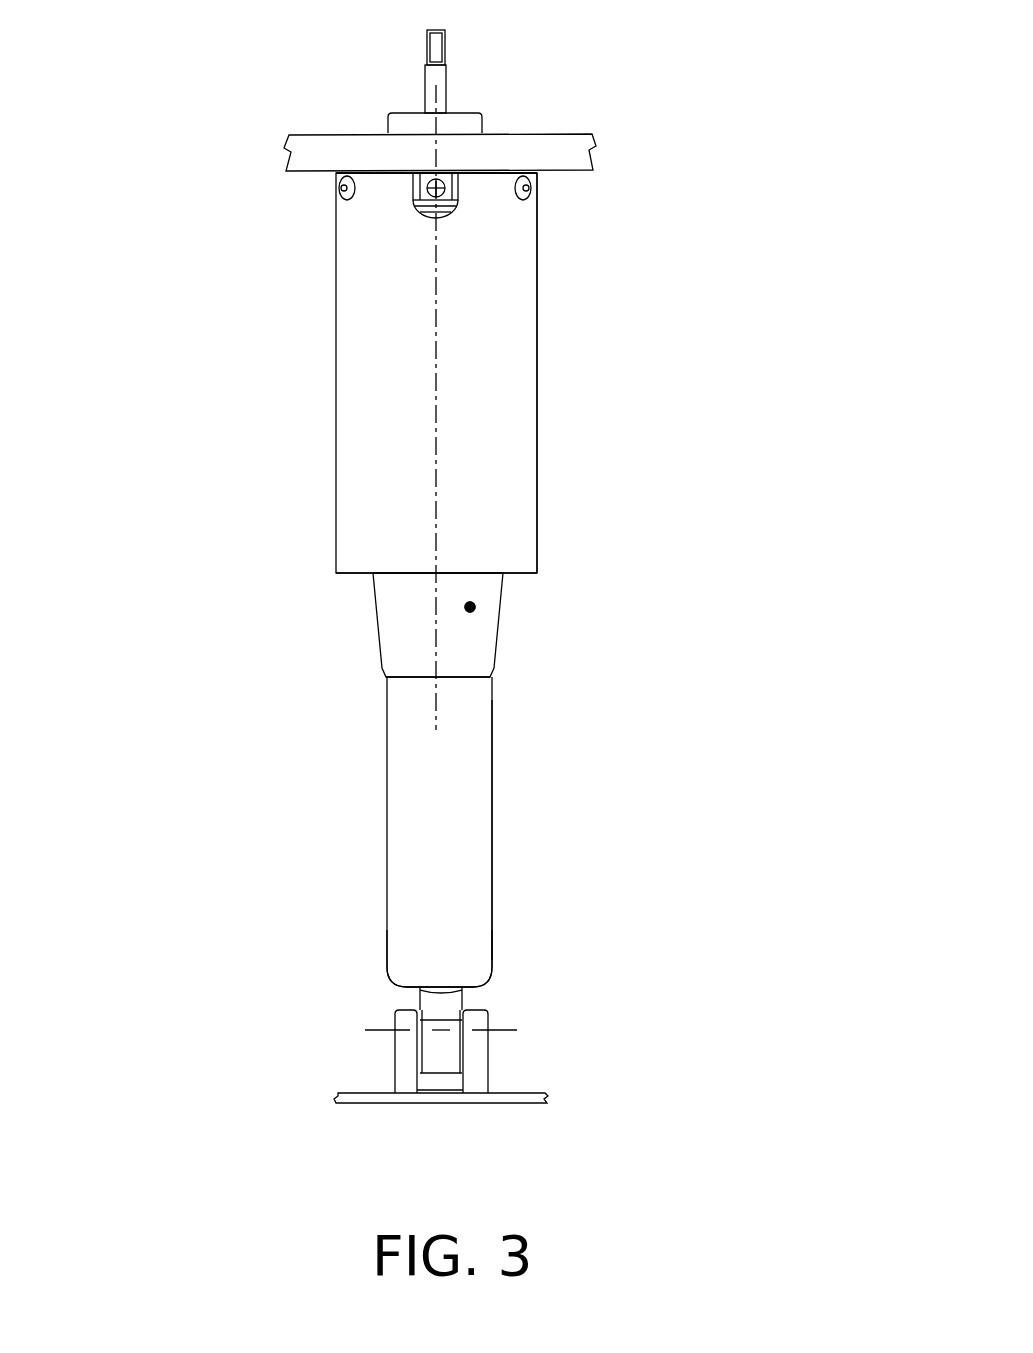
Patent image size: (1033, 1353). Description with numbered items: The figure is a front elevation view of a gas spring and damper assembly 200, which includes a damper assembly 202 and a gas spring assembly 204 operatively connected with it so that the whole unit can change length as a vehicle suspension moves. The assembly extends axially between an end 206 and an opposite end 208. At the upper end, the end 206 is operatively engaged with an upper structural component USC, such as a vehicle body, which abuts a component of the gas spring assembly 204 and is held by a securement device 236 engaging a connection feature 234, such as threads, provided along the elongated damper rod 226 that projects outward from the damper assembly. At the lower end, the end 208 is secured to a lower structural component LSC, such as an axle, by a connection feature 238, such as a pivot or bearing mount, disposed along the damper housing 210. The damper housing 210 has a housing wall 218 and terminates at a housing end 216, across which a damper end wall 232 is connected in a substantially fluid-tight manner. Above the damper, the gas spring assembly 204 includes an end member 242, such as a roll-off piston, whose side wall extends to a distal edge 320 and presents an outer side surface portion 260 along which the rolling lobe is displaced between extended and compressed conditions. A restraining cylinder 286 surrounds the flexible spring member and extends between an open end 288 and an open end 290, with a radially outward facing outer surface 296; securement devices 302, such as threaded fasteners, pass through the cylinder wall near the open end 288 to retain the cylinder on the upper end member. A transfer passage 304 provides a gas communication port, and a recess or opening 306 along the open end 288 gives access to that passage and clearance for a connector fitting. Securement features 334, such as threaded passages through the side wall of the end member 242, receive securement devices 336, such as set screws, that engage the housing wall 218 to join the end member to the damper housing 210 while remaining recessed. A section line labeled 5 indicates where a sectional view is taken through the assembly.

The gas spring and damper assembly 200 is at (668, 105).
The damper assembly 202 is at (397, 832).
The gas spring assembly 204 is at (374, 373).
The end 206 is at (645, 208).
The end 208 is at (641, 989).
The damper housing 210 is at (497, 810).
The housing end 216 is at (543, 940).
The housing wall 218 is at (494, 865).
The elongated damper rod 226 is at (425, 80).
The damper end wall 232 is at (400, 987).
The connection feature 234 is at (446, 72).
The securement device 236 is at (482, 122).
The connection feature 238 is at (461, 1000).
The end member 242 is at (372, 593).
The outer side surface portion 260 is at (376, 630).
The restraining cylinder 286 is at (541, 362).
The open end 288 is at (547, 215).
The open end 290 is at (559, 545).
The outer surface 296 is at (537, 437).
The securement devices 302 is at (340, 197).
The transfer passage 304 is at (448, 193).
The recess or opening 306 is at (428, 210).
The distal edge 320 is at (412, 678).
The securement features 334 is at (481, 607).
The securement devices 336 is at (470, 607).
The section line 5 is at (437, 87).
The upper structural component USC is at (307, 141).
The lower structural component LSC is at (360, 1093).